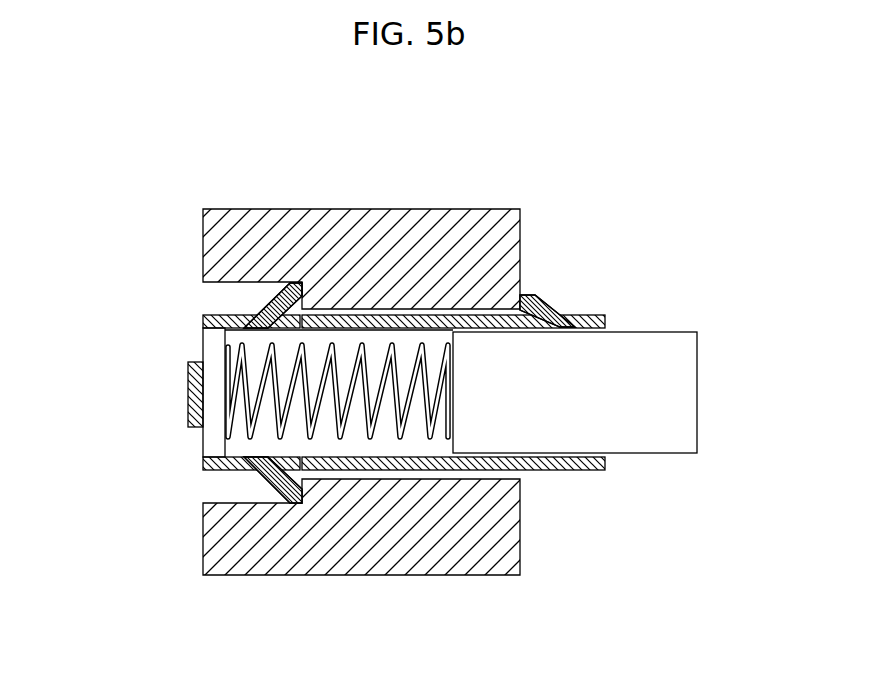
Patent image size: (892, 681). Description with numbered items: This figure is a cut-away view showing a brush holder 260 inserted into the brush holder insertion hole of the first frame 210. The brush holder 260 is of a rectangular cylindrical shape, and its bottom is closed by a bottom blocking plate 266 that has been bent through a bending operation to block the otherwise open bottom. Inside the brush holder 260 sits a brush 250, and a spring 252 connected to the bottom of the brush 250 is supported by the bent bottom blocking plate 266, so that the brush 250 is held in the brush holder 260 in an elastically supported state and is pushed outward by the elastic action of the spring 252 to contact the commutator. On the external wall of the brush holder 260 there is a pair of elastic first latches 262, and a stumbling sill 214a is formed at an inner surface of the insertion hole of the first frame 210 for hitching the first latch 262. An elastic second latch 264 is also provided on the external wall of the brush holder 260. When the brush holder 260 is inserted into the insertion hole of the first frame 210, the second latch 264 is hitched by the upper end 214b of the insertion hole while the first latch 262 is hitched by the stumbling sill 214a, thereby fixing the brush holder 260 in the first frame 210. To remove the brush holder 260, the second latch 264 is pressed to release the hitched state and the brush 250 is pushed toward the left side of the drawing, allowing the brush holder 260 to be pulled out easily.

The first frame 210 is at (458, 209).
The stumbling sill 214a is at (288, 284).
The upper end of the brush holder insertion hole 214b is at (530, 300).
The brush 250 is at (653, 436).
The spring 252 is at (340, 415).
The brush holder 260 is at (563, 482).
The first latch 262 is at (265, 303).
The second latch 264 is at (514, 279).
The bottom blocking plate 266 is at (188, 387).